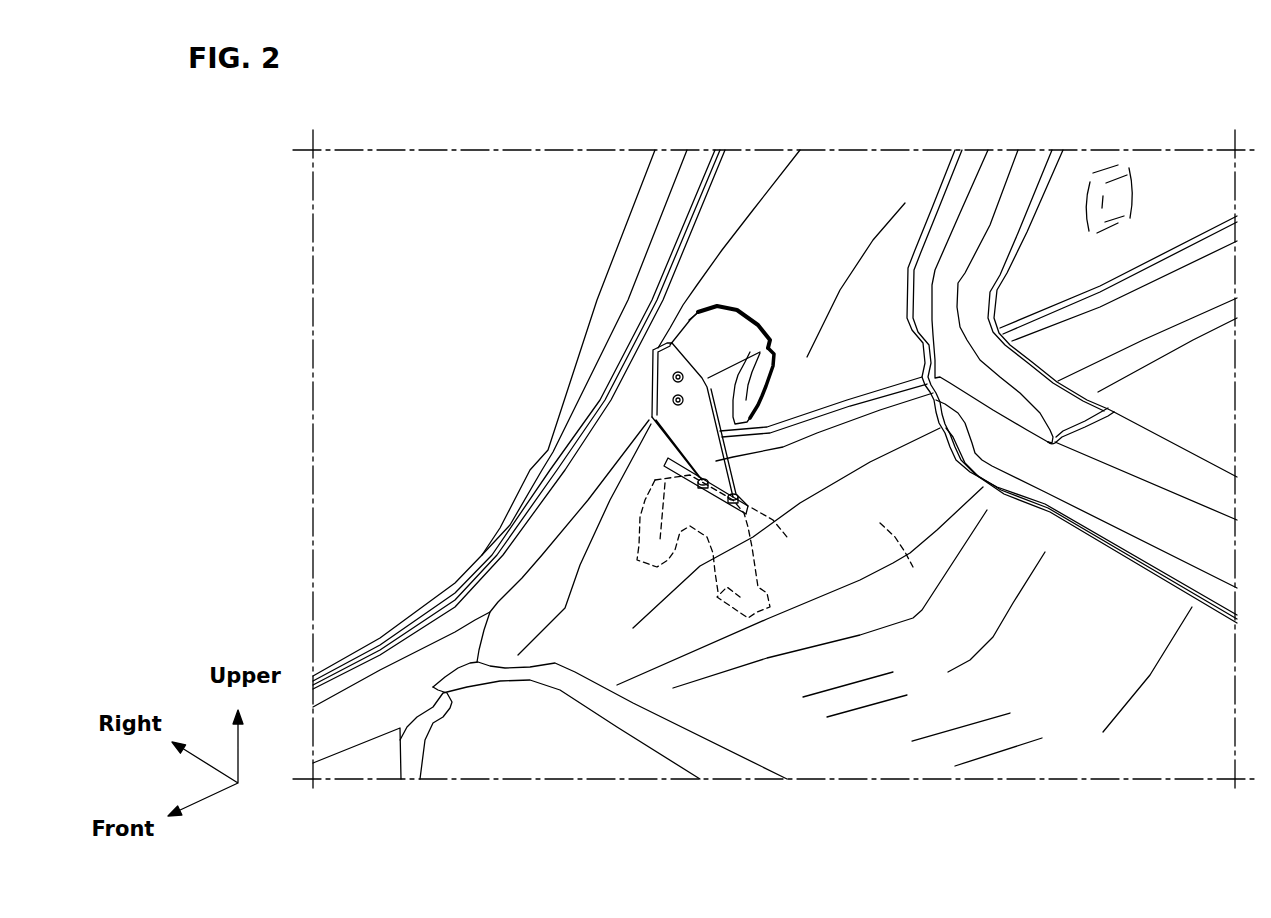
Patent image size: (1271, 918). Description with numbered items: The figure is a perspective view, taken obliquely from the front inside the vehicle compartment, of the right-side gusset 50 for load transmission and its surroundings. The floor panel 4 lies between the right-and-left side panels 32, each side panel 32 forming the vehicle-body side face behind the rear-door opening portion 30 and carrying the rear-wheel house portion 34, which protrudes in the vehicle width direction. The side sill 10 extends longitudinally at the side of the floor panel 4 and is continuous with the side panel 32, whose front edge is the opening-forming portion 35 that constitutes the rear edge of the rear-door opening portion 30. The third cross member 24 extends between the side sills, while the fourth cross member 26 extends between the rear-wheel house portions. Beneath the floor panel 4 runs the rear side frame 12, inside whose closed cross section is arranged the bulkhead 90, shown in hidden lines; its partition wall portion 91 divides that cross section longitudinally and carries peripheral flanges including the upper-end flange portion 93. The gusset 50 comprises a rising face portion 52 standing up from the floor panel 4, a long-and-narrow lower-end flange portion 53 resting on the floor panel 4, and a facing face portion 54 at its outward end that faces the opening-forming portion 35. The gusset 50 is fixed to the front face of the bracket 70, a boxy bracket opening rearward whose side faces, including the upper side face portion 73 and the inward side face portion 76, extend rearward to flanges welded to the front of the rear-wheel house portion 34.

The floor panel 4 is at (1042, 768).
The side sill 10 is at (320, 736).
The rear side frame 12 is at (906, 558).
The No. 3 cross member 24 is at (503, 768).
The No. 4 cross member 26 is at (1184, 460).
The rear-door opening portion 30 is at (437, 362).
The side panel 32 is at (612, 217).
The rear-wheel house portion 34 is at (830, 162).
The opening-forming portion 35 is at (753, 162).
The gusset 50 is at (669, 400).
The rising face portion 52 is at (700, 447).
The lower-end flange portion 53 is at (750, 483).
The facing face portion 54 is at (652, 360).
The bracket for attachment 70 is at (745, 339).
The upper side face portion 73 is at (737, 342).
The inward side face portion 76 is at (729, 378).
The bulkhead 90 is at (707, 549).
The partition wall portion 91 is at (701, 546).
The upper-end flange portion 93 is at (783, 536).